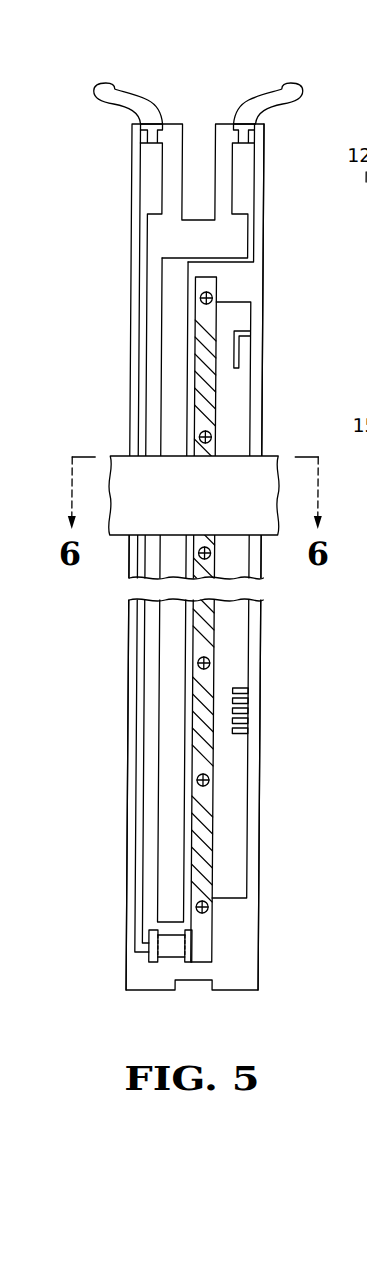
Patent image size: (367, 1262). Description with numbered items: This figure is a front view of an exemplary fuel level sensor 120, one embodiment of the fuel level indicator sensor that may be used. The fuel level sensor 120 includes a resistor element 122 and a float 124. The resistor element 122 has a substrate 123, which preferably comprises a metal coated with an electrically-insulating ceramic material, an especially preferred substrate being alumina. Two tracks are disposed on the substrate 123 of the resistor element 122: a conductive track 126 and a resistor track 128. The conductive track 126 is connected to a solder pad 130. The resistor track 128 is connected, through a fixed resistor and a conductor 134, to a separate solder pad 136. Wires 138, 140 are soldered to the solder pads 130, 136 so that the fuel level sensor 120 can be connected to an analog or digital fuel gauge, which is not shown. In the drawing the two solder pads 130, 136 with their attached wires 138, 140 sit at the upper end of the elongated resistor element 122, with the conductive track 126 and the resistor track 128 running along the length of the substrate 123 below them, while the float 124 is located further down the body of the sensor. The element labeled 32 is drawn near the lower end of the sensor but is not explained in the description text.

The connector 32 is at (175, 963).
The fuel level sensor 120 is at (270, 191).
The resistor element 122 is at (132, 268).
The substrate 123 is at (264, 280).
The float 124 is at (122, 544).
The conductive track 126 is at (162, 396).
The resistor track 128 is at (218, 375).
The solder pad 130 is at (247, 202).
The conductor 134 is at (140, 358).
The solder pad 136 is at (143, 178).
The wire 138 is at (129, 91).
The wire 140 is at (266, 91).